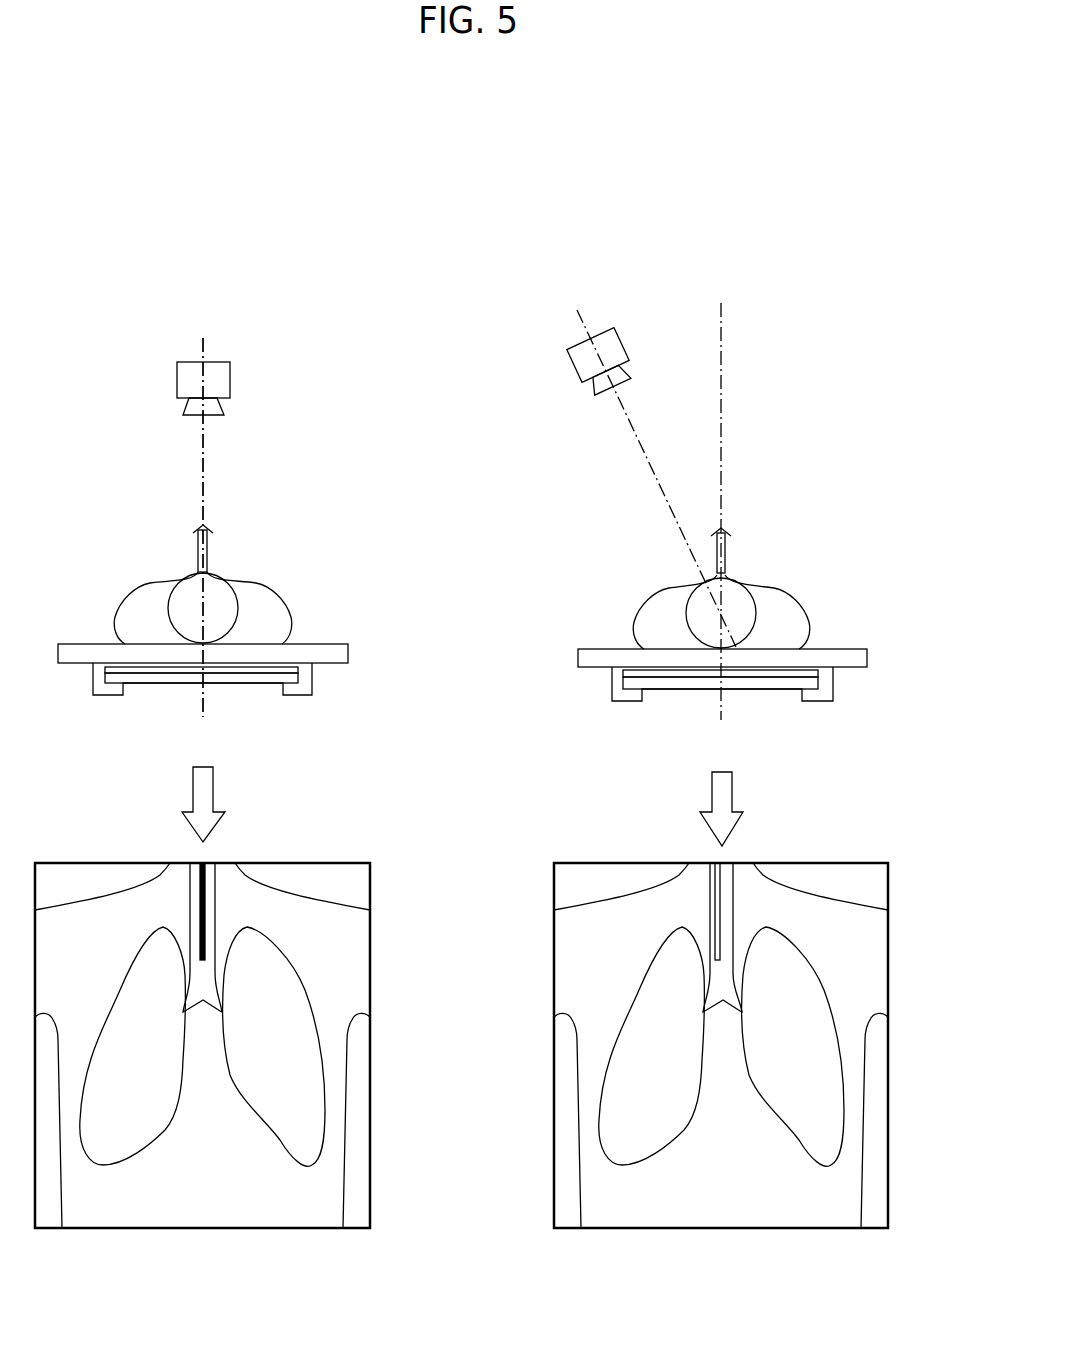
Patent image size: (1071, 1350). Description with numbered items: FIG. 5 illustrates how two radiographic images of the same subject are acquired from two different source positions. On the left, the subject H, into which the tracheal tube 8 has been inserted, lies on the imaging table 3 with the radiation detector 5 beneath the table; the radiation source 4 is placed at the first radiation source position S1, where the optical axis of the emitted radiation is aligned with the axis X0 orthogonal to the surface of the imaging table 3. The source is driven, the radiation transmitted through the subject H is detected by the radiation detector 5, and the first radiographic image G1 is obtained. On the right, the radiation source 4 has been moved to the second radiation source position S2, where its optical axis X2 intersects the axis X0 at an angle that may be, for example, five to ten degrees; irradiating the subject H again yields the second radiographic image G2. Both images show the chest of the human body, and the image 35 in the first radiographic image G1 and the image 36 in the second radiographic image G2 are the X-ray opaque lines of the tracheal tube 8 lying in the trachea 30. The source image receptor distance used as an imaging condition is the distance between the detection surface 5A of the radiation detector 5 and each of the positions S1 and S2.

The imaging table 3 is at (348, 651).
The radiation source 4 is at (230, 372).
The radiation detector 5 is at (227, 683).
The detection surface 5A is at (283, 668).
The tracheal tube 8 is at (207, 545).
The trachea 30 is at (216, 885).
The image of X-ray opaque line 35 is at (208, 868).
The image of X-ray opaque line 36 is at (734, 885).
The subject H is at (268, 590).
The first radiographic image G1 is at (335, 862).
The second radiographic image G2 is at (855, 862).
The first radiation source position S1 is at (203, 328).
The second radiation source position S2 is at (558, 341).
The axis X0 is at (203, 443).
The optical axis X2 is at (624, 412).